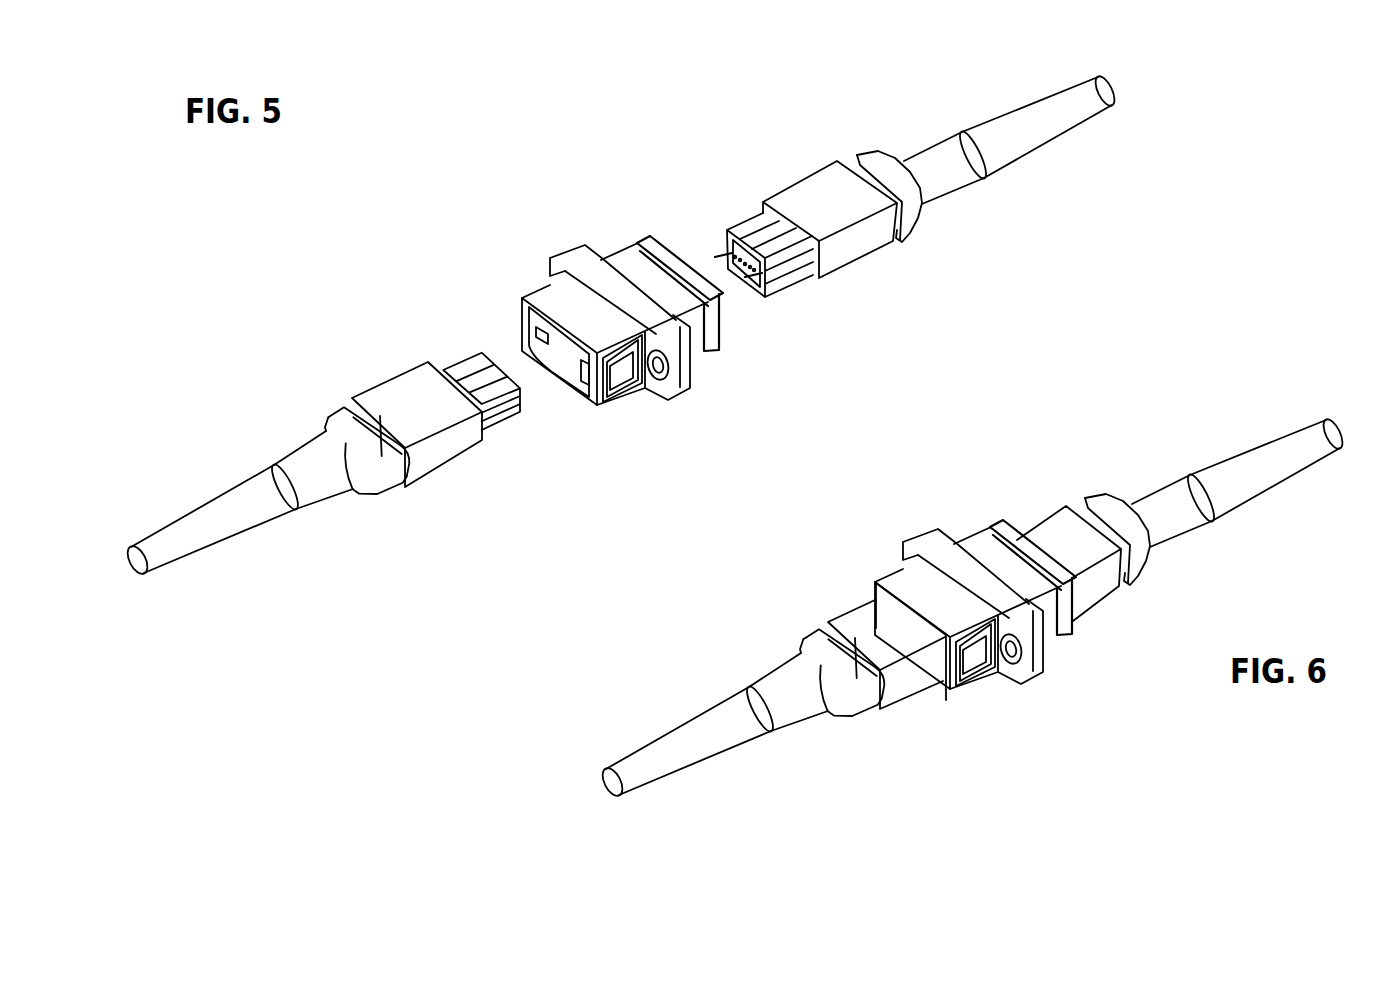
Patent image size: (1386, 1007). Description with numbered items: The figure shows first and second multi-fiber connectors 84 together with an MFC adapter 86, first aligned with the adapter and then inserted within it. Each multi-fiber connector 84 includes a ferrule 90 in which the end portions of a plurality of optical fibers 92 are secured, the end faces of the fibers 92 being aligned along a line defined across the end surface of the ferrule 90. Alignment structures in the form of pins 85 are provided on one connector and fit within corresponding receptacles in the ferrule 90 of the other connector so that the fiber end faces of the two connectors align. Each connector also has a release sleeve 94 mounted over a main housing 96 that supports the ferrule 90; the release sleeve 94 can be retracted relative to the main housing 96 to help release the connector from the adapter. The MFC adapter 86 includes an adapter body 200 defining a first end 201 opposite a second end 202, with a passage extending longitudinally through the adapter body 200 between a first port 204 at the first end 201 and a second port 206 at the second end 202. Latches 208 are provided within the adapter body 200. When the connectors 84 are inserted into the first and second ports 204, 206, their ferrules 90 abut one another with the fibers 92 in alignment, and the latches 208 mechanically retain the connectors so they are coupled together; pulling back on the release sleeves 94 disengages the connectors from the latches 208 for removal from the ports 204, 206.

In FIG. 5, the multi-fiber connector 84 is at (621, 325).
In FIG. 6, the multi-fiber connector 84 is at (1052, 491).
In FIG. 5, the pins 85 is at (717, 255).
In FIG. 5, the MFC adapter 86 is at (589, 308).
In FIG. 6, the MFC adapter 86 is at (918, 524).
In FIG. 5, the ferrule 90 is at (764, 298).
In FIG. 5, the optical fibers 92 is at (746, 260).
In FIG. 5, the release sleeve 94 is at (418, 362).
In FIG. 5, the main housing 96 is at (397, 485).
In FIG. 5, the adapter body 200 is at (603, 257).
In FIG. 5, the first end 201 is at (655, 236).
In FIG. 5, the second end 202 is at (526, 296).
In FIG. 5, the first port 204 is at (683, 258).
In FIG. 5, the second port 206 is at (565, 377).
In FIG. 5, the latches 208 is at (537, 333).